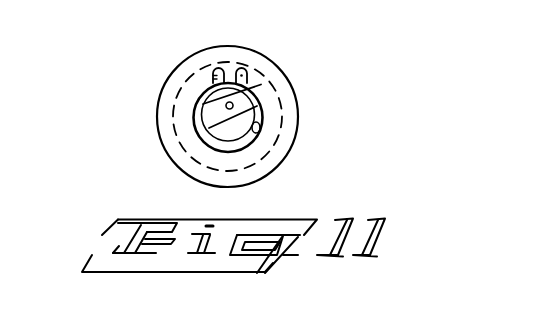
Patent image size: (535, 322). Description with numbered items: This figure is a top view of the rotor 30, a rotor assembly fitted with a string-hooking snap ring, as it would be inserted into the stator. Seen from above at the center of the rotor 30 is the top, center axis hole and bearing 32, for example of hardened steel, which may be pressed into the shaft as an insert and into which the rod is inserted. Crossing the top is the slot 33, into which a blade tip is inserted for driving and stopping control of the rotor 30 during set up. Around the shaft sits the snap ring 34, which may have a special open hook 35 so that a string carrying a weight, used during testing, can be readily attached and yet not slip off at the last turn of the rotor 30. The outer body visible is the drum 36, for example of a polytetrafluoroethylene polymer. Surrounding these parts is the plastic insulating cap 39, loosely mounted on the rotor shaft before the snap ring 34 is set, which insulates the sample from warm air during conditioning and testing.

The rotor 30 is at (245, 137).
The top center axis hole and bearing 32 is at (261, 84).
The slot 33 is at (212, 115).
The snap ring 34 is at (252, 76).
The open hook 35 is at (231, 67).
The drum 36 is at (177, 92).
The plastic insulating cap 39 is at (257, 134).